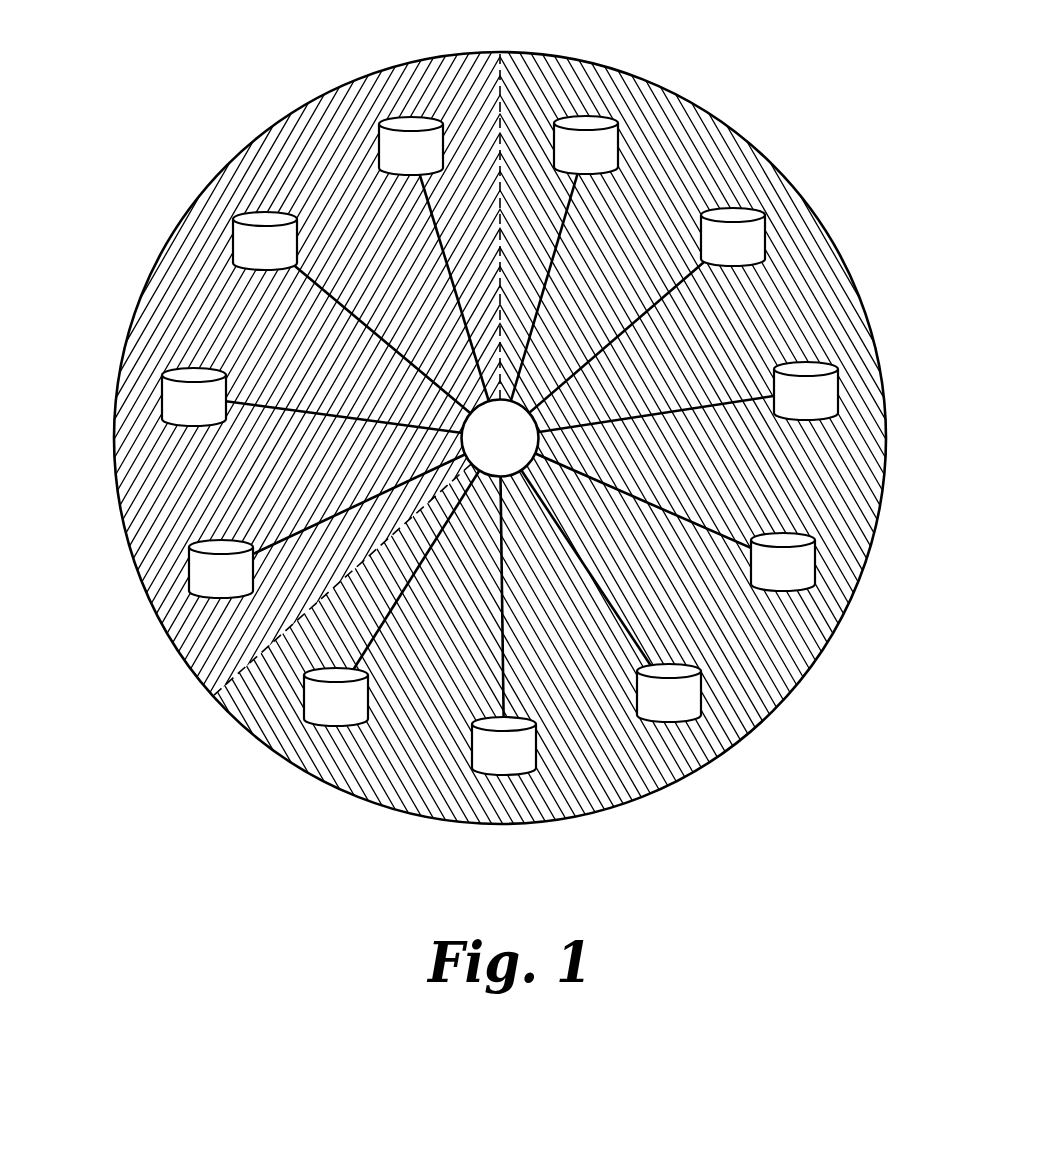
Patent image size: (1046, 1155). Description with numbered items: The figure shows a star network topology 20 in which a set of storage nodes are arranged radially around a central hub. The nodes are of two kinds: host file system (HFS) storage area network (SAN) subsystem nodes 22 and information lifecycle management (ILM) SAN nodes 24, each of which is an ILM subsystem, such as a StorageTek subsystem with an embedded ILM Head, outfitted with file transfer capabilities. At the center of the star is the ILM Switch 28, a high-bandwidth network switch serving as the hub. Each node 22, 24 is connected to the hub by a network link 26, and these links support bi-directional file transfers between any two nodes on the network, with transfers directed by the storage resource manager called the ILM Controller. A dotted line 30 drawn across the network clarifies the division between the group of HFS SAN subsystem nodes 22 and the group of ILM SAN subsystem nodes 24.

The star network topology 20 is at (211, 64).
The host file system (HFS) storage area network (SAN) subsystem node 22 is at (410, 124).
The information lifecycle management (ILM) SAN node 24 is at (588, 122).
The network link 26 is at (736, 388).
The ILM Switch 28 is at (549, 412).
The dotted line 30 is at (217, 693).